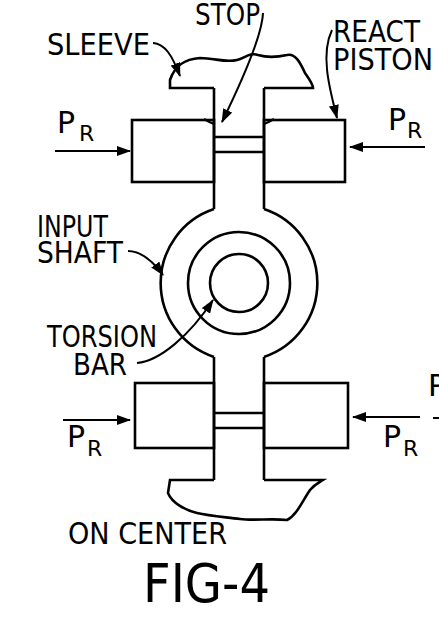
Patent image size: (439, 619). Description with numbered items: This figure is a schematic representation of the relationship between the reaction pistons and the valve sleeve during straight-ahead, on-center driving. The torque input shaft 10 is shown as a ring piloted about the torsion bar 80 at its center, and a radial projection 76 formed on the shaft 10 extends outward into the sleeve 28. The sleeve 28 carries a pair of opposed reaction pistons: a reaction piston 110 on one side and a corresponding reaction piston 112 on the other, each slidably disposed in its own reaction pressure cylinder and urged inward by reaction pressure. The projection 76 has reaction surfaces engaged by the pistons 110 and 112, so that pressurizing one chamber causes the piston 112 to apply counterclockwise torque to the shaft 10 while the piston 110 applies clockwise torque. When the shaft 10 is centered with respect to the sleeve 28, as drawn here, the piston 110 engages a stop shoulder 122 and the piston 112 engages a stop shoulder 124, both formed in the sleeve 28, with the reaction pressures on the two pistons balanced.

The valve sleeve 28 is at (286, 72).
The radial projection 76 is at (237, 176).
The torque input shaft 10 is at (285, 327).
The torsion bar 80 is at (248, 293).
The reaction piston 110 is at (190, 158).
The reaction piston 112 is at (322, 158).
The stop shoulder 122 is at (206, 120).
The stop shoulder 124 is at (270, 120).